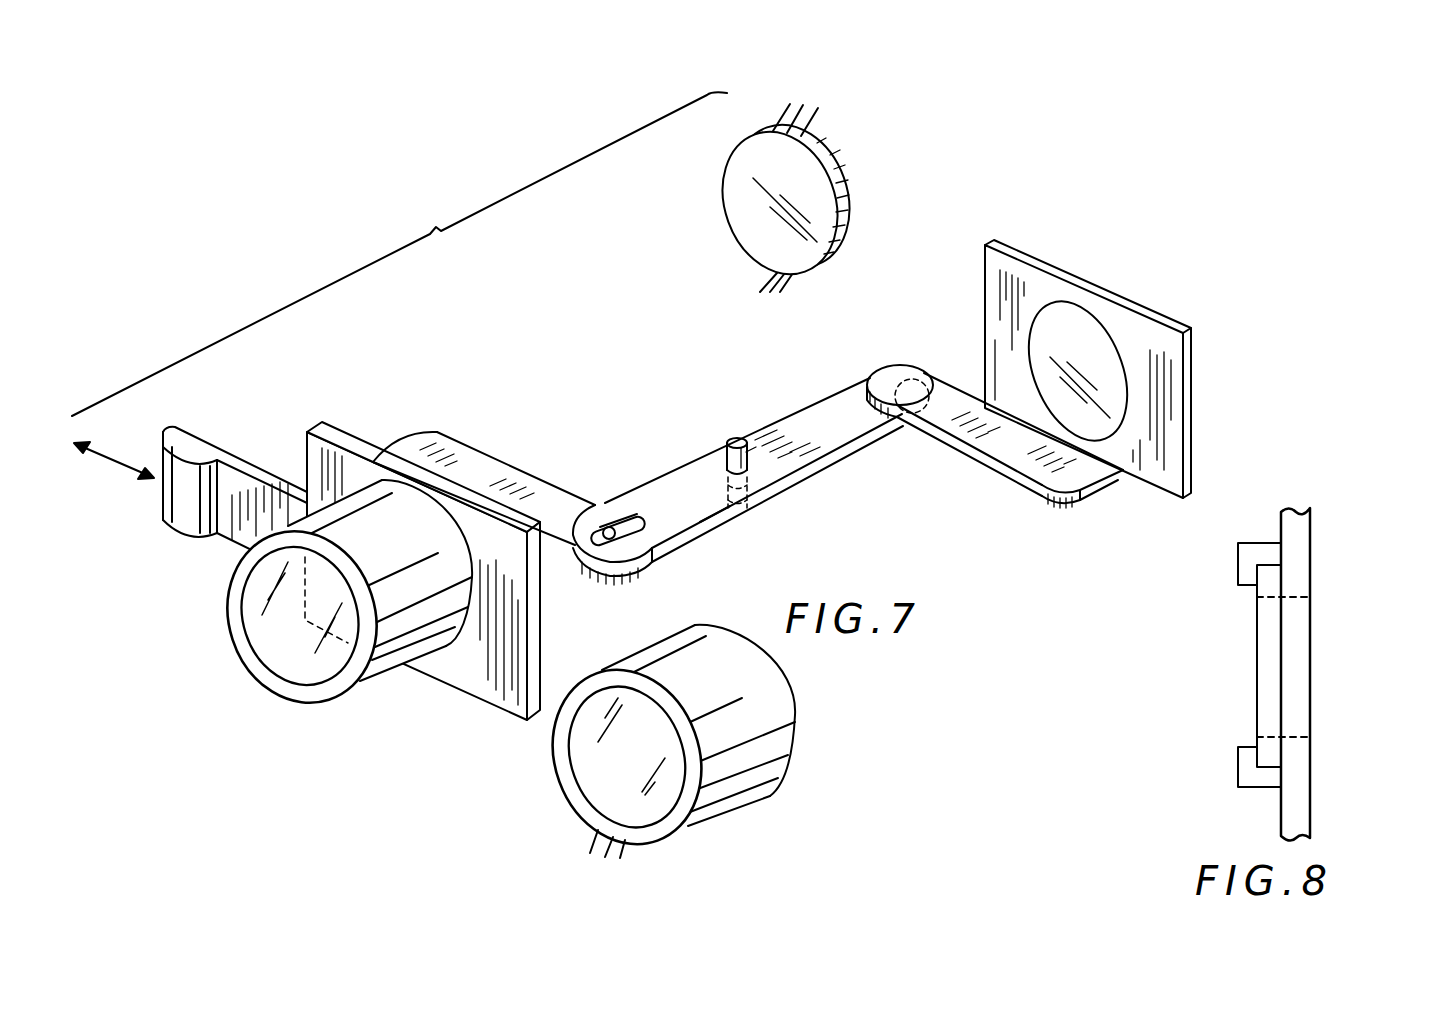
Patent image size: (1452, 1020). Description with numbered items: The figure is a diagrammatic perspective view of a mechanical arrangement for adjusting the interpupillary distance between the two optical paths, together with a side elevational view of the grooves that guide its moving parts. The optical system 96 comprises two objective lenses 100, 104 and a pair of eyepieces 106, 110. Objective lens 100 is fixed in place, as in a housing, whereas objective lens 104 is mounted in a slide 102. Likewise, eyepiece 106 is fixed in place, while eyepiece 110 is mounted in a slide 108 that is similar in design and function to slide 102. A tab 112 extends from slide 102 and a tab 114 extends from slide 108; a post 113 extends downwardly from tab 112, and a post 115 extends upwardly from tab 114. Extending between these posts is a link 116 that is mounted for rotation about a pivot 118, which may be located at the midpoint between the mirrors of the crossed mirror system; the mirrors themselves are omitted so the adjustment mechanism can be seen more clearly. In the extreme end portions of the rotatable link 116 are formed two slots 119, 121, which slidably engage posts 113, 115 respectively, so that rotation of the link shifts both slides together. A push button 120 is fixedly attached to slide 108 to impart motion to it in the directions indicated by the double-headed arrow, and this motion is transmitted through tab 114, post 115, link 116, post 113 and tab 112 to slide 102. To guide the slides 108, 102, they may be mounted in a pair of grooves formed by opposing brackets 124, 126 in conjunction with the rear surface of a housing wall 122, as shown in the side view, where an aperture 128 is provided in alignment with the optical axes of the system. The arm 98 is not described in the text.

In FIG. 7, the optical system 96 is at (748, 449).
In FIG. 7, the arm 98 is at (754, 482).
In FIG. 7, the objective lens 100 is at (845, 168).
In FIG. 7, the slide 102 is at (1117, 369).
In FIG. 8, the slide 102 is at (1340, 666).
In FIG. 7, the objective lens 104 is at (1093, 334).
In FIG. 7, the eyepiece 106 is at (718, 795).
In FIG. 7, the slide 108 is at (510, 704).
In FIG. 8, the slide 108 is at (1267, 586).
In FIG. 7, the eyepiece 110 is at (385, 668).
In FIG. 7, the tab 112 is at (1085, 495).
In FIG. 7, the post 113 is at (915, 413).
In FIG. 7, the tab 114 is at (512, 442).
In FIG. 7, the post 115 is at (608, 528).
In FIG. 7, the link 116 is at (713, 530).
In FIG. 7, the pivot 118 is at (753, 414).
In FIG. 7, the slot 119 is at (906, 404).
In FIG. 7, the push button 120 is at (200, 452).
In FIG. 7, the slot 121 is at (633, 520).
In FIG. 8, the housing wall 122 is at (1290, 532).
In FIG. 8, the bracket 124 is at (1240, 558).
In FIG. 8, the bracket 126 is at (1240, 767).
In FIG. 8, the aperture 128 is at (1292, 737).